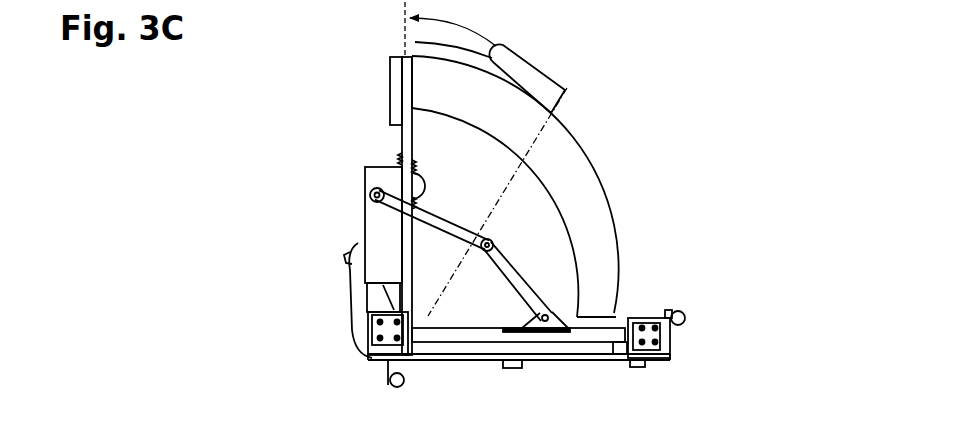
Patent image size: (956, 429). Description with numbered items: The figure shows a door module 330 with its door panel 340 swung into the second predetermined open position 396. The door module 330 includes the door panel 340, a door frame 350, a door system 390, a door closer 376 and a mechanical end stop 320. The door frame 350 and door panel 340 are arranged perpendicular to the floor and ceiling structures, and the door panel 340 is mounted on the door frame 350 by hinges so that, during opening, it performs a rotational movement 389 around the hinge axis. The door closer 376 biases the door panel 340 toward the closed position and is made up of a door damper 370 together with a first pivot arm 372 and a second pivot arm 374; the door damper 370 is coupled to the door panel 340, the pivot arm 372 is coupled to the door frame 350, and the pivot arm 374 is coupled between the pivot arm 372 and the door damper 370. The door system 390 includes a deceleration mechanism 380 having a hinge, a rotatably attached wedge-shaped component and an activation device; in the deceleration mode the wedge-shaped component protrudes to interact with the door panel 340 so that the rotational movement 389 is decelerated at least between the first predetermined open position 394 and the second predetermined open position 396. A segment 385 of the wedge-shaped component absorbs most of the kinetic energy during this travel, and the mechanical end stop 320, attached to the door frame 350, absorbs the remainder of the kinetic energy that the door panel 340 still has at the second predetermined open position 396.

The door module 330 is at (711, 157).
The door panel 340 is at (400, 141).
The door frame 350 is at (380, 352).
The door damper 370 is at (381, 238).
The first pivot arm 372 is at (505, 263).
The second pivot arm 374 is at (465, 237).
The door closer 376 is at (344, 196).
The deceleration mechanism 380 is at (562, 162).
The segment 385 is at (507, 47).
The rotational movement 389 is at (514, 52).
The door system 390 is at (380, 82).
The first predetermined open position 394 is at (523, 192).
The second predetermined open position 396 is at (426, 29).
The mechanical end stop 320 is at (365, 288).